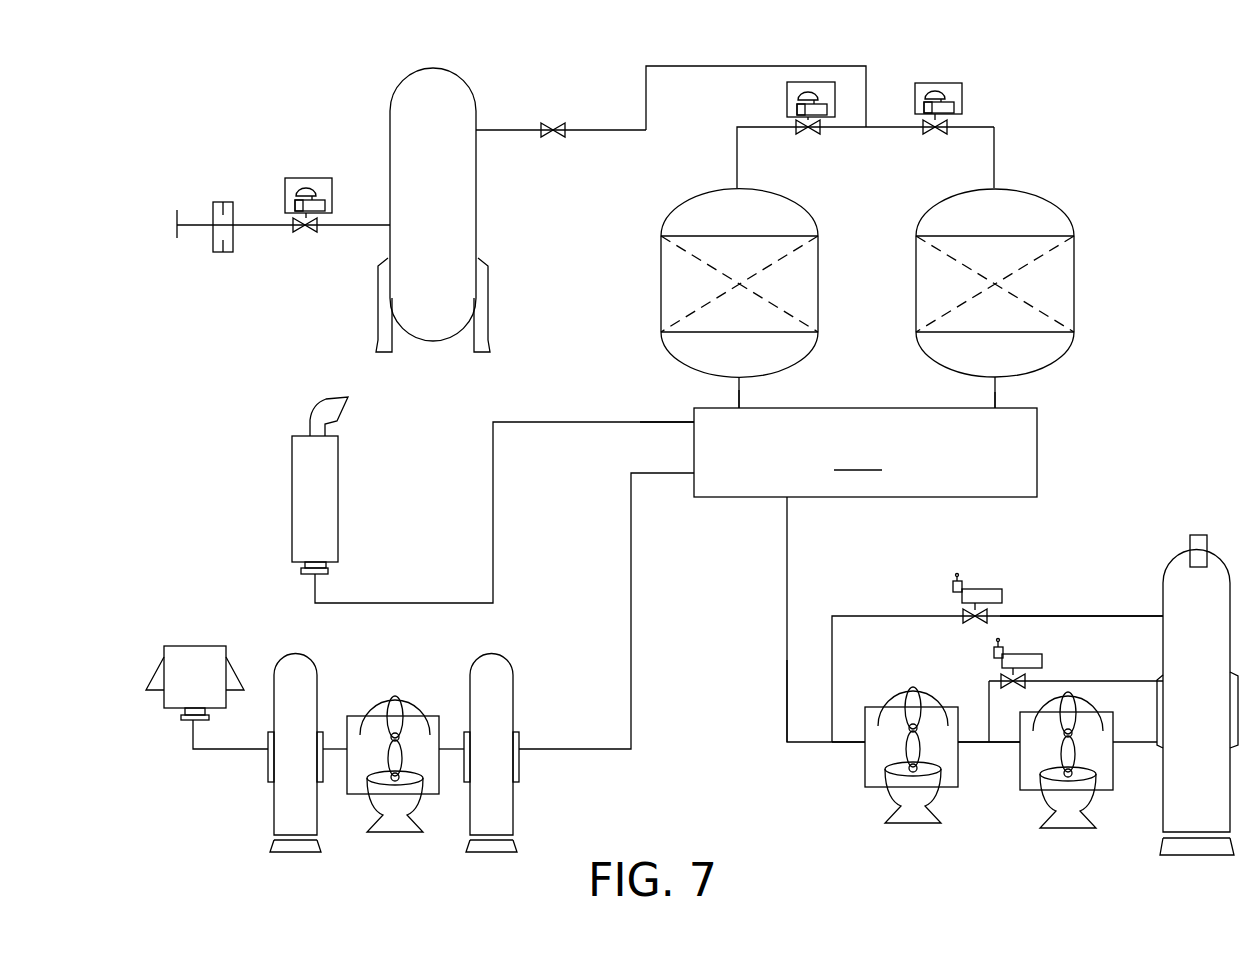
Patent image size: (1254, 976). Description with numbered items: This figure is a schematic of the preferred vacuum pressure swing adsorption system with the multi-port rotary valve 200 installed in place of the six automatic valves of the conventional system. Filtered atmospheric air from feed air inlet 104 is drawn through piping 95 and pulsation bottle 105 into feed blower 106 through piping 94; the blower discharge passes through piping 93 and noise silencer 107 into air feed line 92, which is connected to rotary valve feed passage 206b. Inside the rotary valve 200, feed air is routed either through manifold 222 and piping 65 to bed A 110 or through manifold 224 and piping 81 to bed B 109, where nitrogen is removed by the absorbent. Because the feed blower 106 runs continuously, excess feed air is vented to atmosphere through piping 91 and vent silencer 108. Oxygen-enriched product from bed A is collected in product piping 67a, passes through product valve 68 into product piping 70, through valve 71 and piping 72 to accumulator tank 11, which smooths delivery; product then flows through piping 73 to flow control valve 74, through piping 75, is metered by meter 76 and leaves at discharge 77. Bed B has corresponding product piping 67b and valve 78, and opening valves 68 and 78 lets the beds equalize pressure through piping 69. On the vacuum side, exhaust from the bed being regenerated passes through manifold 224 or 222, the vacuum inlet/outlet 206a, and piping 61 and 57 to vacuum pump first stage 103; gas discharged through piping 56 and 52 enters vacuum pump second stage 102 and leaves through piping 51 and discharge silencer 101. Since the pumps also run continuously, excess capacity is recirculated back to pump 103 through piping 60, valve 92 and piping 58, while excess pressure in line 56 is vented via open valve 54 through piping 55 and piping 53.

The accumulator tank 11 is at (472, 94).
The piping 73 is at (345, 224).
The discharge 77 is at (180, 223).
The meter 76 is at (226, 202).
The piping 75 is at (250, 224).
The flow control valve 74 is at (312, 179).
The piping 72 is at (500, 130).
The valve 71 is at (557, 125).
The product piping 70 is at (796, 66).
The product piping 67b is at (737, 154).
The piping 69 is at (877, 128).
The product piping 67a is at (994, 146).
The valve 78 is at (787, 106).
The product valve 68 is at (955, 84).
The bed B 109 is at (755, 190).
The bed A 110 is at (1010, 190).
The piping 81 is at (739, 386).
The manifold 224 is at (740, 402).
The piping 65 is at (995, 386).
The manifold 222 is at (995, 396).
The rotary valve 200 is at (865, 452).
The vent silencer 108 is at (340, 466).
The piping 91 is at (528, 422).
The feed passage 206b is at (680, 422).
The piping / valve 92 is at (631, 713).
The feed air inlet 104 is at (206, 646).
The piping 95 is at (215, 749).
The pulsation bottle 105 is at (305, 666).
The piping 94 is at (331, 749).
The feed blower 106 is at (393, 698).
The piping 93 is at (452, 749).
The noise silencer 107 is at (510, 666).
The vacuum inlet/outlet 206a is at (787, 518).
The piping 61 is at (787, 679).
The piping 57 is at (848, 742).
The piping 58 is at (870, 616).
The piping 60 is at (1098, 616).
The vacuum pump first stage 103 is at (915, 824).
The piping 56 is at (971, 745).
The piping 52 is at (1002, 741).
The piping 53 is at (989, 684).
The valve 54 is at (1018, 654).
The piping 55 is at (1092, 681).
The vacuum pump second stage 102 is at (1045, 803).
The piping 51 is at (1128, 742).
The discharge silencer 101 is at (1163, 581).